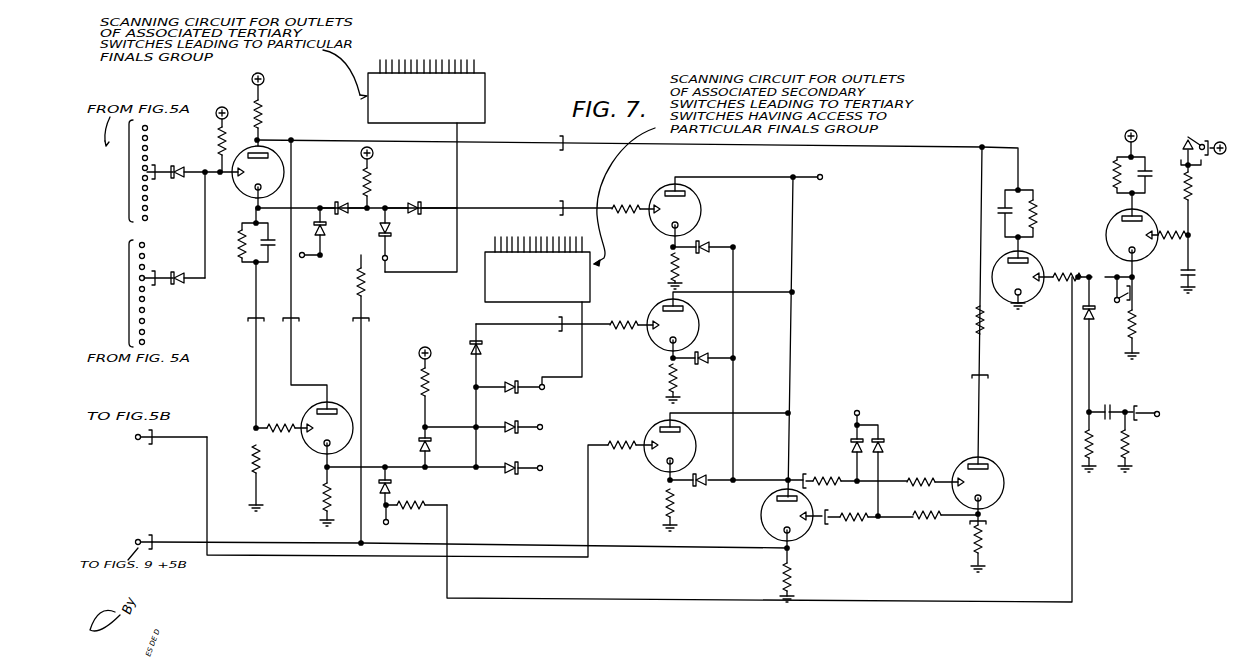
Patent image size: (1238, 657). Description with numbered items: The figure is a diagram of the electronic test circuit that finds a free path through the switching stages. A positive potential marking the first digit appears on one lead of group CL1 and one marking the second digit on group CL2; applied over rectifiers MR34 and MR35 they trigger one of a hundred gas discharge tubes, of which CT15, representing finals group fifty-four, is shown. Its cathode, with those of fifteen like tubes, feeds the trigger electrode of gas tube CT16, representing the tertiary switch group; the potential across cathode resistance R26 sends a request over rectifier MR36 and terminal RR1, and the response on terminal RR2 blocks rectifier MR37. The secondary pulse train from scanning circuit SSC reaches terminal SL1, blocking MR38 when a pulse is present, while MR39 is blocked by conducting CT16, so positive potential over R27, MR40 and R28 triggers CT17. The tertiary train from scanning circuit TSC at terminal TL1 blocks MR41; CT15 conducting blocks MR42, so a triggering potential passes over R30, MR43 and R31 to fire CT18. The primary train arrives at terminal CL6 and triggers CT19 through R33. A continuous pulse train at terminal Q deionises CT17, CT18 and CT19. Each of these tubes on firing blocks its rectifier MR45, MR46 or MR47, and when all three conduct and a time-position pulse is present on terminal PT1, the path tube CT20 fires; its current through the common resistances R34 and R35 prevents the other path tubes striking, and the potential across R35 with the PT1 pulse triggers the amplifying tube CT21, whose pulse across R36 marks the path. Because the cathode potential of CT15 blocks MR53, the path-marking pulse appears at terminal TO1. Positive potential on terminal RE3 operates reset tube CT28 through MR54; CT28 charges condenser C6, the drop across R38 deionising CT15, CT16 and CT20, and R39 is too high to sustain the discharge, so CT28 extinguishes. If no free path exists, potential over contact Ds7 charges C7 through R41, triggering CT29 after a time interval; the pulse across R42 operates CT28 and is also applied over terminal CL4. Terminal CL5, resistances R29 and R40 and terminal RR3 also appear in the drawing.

The tertiary scanning circuit TSC is at (485, 93).
The secondary scanning circuit SSC is at (490, 293).
The first digit lead group CL1 is at (116, 171).
The second digit lead group CL2 is at (116, 293).
The release terminal CL4 is at (1156, 300).
The contact lead 5 CL5 is at (123, 543).
The primary pulse train terminal CL6 is at (150, 438).
The first digit rectifier MR34 is at (192, 164).
The second digit rectifier MR35 is at (174, 269).
The request rectifier MR36 is at (516, 459).
The response rectifier MR37 is at (502, 419).
The secondary pulse rectifier MR38 is at (521, 380).
The tertiary group rectifier MR39 is at (446, 447).
The CT17 trigger rectifier MR40 is at (498, 350).
The tertiary pulse rectifier MR41 is at (407, 231).
The finals group rectifier MR42 is at (341, 200).
The CT18 trigger rectifier MR43 is at (421, 199).
The CT17 output rectifier MR45 is at (708, 340).
The CT18 output rectifier MR46 is at (706, 242).
The CT19 output rectifier MR47 is at (703, 471).
The path-marking rectifier MR53 is at (339, 231).
The reset rectifier MR54 is at (1059, 312).
The cathode resistance R26 is at (322, 496).
The CT17 trigger resistance R27 is at (428, 412).
The CT17 control resistance R28 is at (624, 332).
The resistor R29 is at (241, 236).
The CT18 trigger resistance R30 is at (373, 194).
The CT18 control resistance R31 is at (624, 220).
The CT19 control resistance R33 is at (608, 452).
The common anode resistance R34 is at (996, 322).
The common cathode resistance R35 is at (995, 539).
The CT21 cathode resistance R36 is at (804, 579).
The supply resistance R38 is at (280, 109).
The CT28 anode resistance R39 is at (1040, 215).
The resistor R40 is at (412, 500).
The timing resistance R41 is at (1193, 205).
The CT29 cathode resistance R42 is at (1147, 324).
The reset condenser C6 is at (997, 209).
The timing condenser C7 is at (1202, 278).
The finals group gas discharge tube CT15 is at (285, 158).
The tertiary group gas tube CT16 is at (354, 441).
The secondary pulse tube CT17 is at (663, 318).
The tertiary pulse tube CT18 is at (664, 204).
The primary pulse tube CT19 is at (661, 440).
The free path tube CT20 is at (1000, 481).
The common amplifying gas tube CT21 is at (805, 515).
The reset gas discharge tube CT28 is at (980, 276).
The release tube CT29 is at (1104, 231).
The path-marking output terminal TO1 is at (317, 271).
The tertiary pulse train terminal TL1 is at (401, 264).
The secondary pulse train terminal SL1 is at (556, 389).
The request terminal RR1 is at (538, 486).
The response terminal RR2 is at (546, 414).
The terminal RR3 is at (369, 558).
The time position pulse terminal PT1 is at (845, 399).
The reset terminal RE3 is at (1166, 426).
The deionising pulse terminal Q is at (838, 185).
The release contact Ds7 is at (1183, 133).